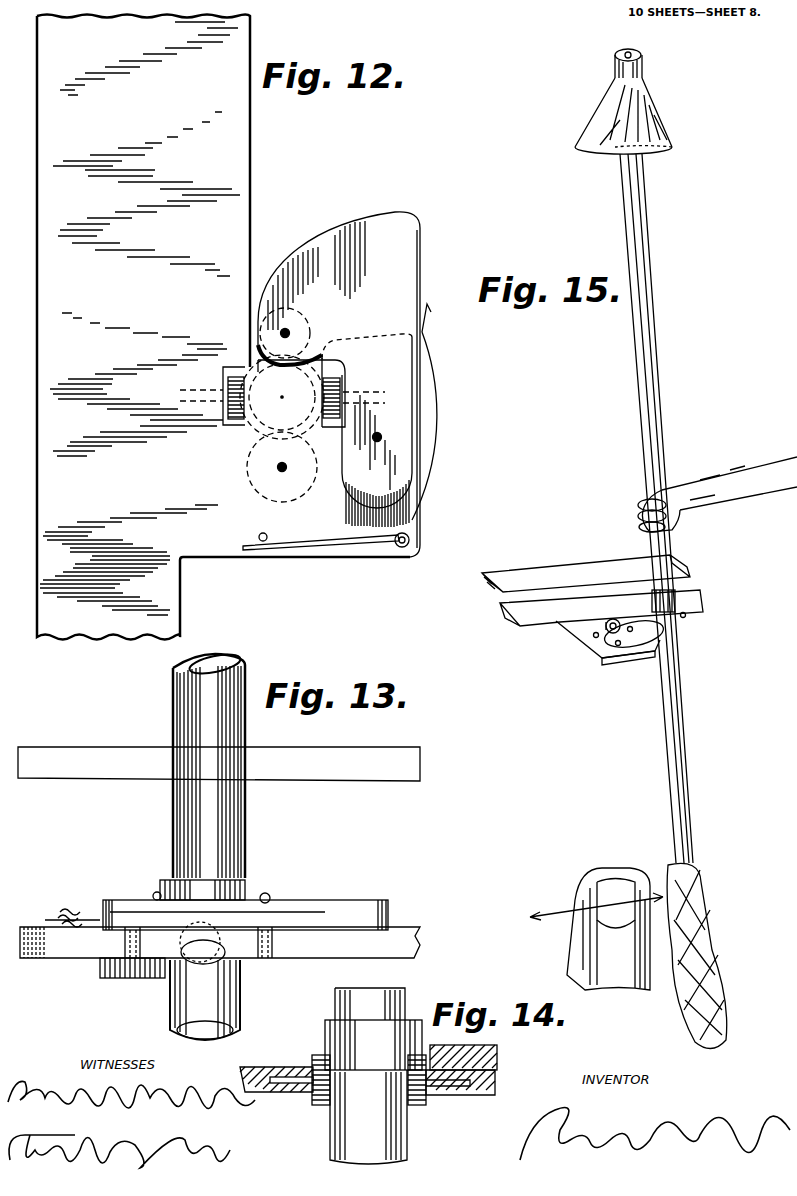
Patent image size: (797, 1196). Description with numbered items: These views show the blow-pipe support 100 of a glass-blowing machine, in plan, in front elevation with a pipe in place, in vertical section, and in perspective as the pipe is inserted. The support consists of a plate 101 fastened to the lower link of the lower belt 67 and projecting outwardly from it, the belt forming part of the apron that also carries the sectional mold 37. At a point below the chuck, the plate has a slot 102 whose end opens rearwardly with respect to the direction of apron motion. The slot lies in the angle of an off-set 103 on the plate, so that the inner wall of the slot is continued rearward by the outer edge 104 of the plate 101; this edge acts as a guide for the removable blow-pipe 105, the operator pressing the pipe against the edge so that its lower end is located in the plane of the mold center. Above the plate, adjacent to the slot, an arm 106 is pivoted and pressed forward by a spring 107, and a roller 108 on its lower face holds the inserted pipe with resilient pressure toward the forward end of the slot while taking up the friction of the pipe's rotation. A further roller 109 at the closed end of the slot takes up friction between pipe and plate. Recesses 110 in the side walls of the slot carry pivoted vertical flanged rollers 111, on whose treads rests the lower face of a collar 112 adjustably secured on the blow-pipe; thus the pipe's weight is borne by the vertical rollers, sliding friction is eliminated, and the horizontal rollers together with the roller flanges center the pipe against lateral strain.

In FIG. 15, the sectional mold 37 is at (596, 929).
In FIG. 13, the lower belt 67 is at (343, 770).
In FIG. 15, the lower belt 67 is at (496, 604).
In FIG. 12, the blow-pipe support 100 is at (339, 375).
In FIG. 15, the blow-pipe support 100 is at (687, 619).
In FIG. 12, the plate 101 is at (223, 327).
In FIG. 15, the plate 101 is at (636, 609).
In FIG. 12, the slot 102 is at (263, 424).
In FIG. 15, the slot 102 is at (606, 630).
In FIG. 12, the off-set 103 is at (406, 510).
In FIG. 13, the off-set 103 is at (85, 945).
In FIG. 14, the off-set 103 is at (497, 1082).
In FIG. 15, the off-set 103 is at (625, 665).
In FIG. 12, the outer edge 104 is at (255, 244).
In FIG. 13, the outer edge 104 is at (329, 948).
In FIG. 15, the outer edge 104 is at (688, 622).
In FIG. 12, the removable blow-pipe 105 is at (262, 373).
In FIG. 13, the removable blow-pipe 105 is at (232, 724).
In FIG. 14, the removable blow-pipe 105 is at (335, 992).
In FIG. 15, the removable blow-pipe 105 is at (646, 208).
In FIG. 12, the arm 106 is at (361, 285).
In FIG. 13, the arm 106 is at (352, 910).
In FIG. 14, the arm 106 is at (499, 1058).
In FIG. 15, the arm 106 is at (666, 652).
In FIG. 12, the spring 107 is at (442, 406).
In FIG. 13, the spring 107 is at (120, 900).
In FIG. 15, the spring 107 is at (640, 682).
In FIG. 12, the roller 108 is at (300, 350).
In FIG. 13, the roller 108 is at (300, 938).
In FIG. 12, the roller 109 is at (303, 496).
In FIG. 13, the roller 109 is at (120, 980).
In FIG. 12, the recess 110 is at (228, 408).
In FIG. 14, the recess 110 is at (311, 1067).
In FIG. 15, the recess 110 is at (611, 619).
In FIG. 12, the vertical flanged roller 111 is at (226, 386).
In FIG. 13, the vertical flanged roller 111 is at (226, 966).
In FIG. 14, the vertical flanged roller 111 is at (318, 1100).
In FIG. 15, the vertical flanged roller 111 is at (610, 620).
In FIG. 12, the collar 112 is at (243, 482).
In FIG. 13, the collar 112 is at (247, 881).
In FIG. 14, the collar 112 is at (330, 1036).
In FIG. 15, the collar 112 is at (678, 601).